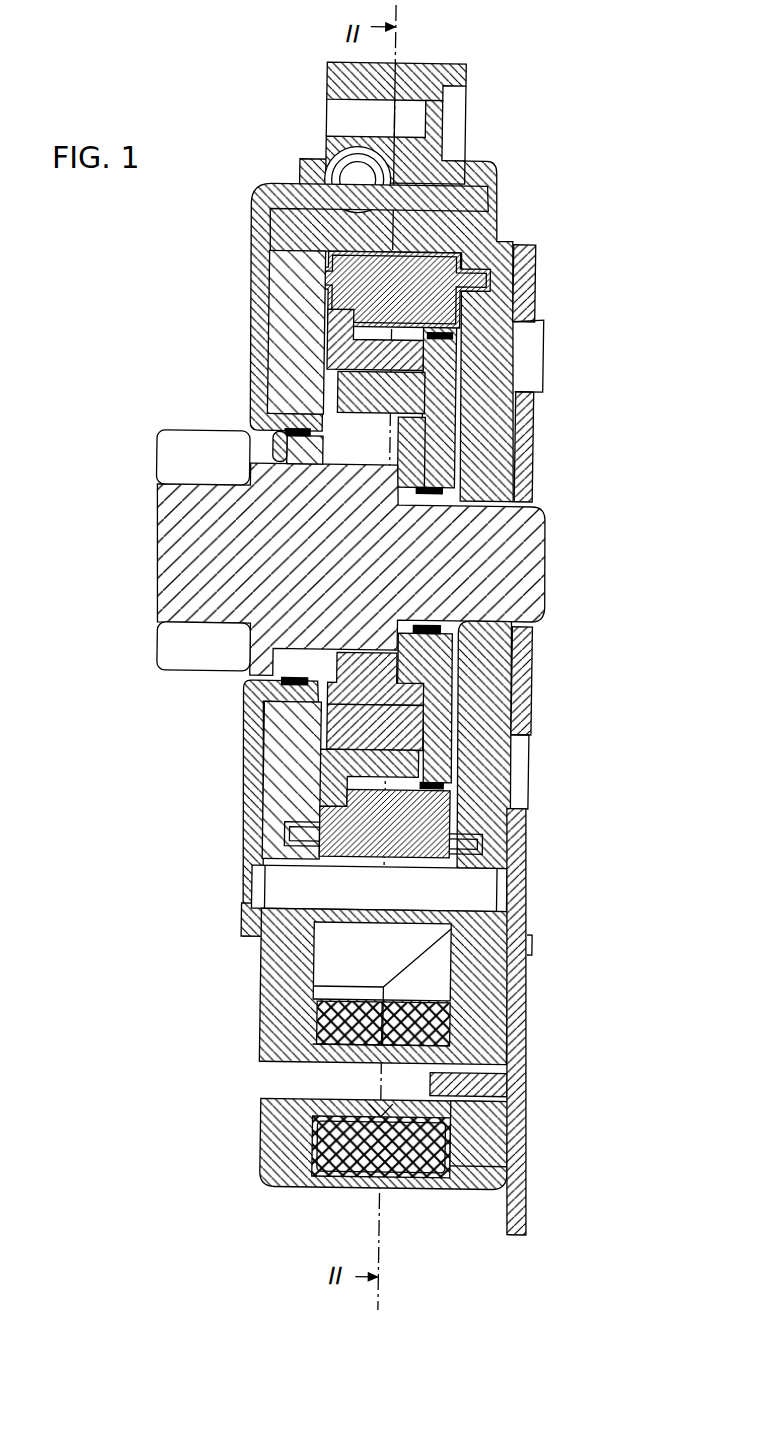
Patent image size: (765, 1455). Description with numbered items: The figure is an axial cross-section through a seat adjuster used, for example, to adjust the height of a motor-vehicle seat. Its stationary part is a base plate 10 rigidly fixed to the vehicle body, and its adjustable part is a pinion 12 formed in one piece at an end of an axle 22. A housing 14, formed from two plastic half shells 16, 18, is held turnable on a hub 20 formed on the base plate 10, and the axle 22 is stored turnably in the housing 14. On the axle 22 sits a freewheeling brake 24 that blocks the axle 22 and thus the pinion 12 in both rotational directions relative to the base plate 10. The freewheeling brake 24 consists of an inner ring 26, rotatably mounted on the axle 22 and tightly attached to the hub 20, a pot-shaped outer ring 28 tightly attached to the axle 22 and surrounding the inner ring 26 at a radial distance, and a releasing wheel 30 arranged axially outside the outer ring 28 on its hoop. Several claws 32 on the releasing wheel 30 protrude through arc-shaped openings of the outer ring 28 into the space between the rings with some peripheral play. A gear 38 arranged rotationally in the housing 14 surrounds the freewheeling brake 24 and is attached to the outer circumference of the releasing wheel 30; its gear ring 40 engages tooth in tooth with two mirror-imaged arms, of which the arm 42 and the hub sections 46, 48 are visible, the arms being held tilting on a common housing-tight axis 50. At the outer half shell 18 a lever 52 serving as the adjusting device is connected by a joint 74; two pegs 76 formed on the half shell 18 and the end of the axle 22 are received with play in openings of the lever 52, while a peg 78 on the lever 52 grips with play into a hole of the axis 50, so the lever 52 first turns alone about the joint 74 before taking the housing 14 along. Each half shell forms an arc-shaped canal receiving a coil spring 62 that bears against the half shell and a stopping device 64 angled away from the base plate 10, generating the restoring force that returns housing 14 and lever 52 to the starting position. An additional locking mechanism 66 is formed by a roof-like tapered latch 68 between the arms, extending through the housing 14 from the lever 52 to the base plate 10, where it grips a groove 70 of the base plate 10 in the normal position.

The base plate 10 is at (245, 768).
The pinion 12 is at (158, 648).
The housing 14 is at (258, 970).
The half shell 16 is at (293, 1186).
The half shell 18 is at (453, 1190).
The hub 20 is at (273, 403).
The axle 22 is at (530, 584).
The freewheeling brake 24 is at (482, 450).
The inner ring 26 is at (278, 452).
The outer ring 28 is at (420, 762).
The releasing wheel 30 is at (470, 707).
The claw 32 is at (353, 697).
The gear 38 is at (332, 828).
The gear ring 40 is at (433, 848).
The arm 42 is at (415, 962).
The hub section 46 is at (360, 1170).
The hub section 48 is at (415, 1170).
The axis 50 is at (351, 1050).
The lever 52 is at (531, 1213).
The coil spring 62 is at (351, 170).
The stopping device 64 is at (277, 185).
The additional locking mechanism 66 is at (246, 894).
The latch 68 is at (382, 897).
The groove 70 is at (244, 907).
The joint 74 is at (539, 350).
The peg 76 is at (530, 767).
The peg 78 is at (436, 1080).